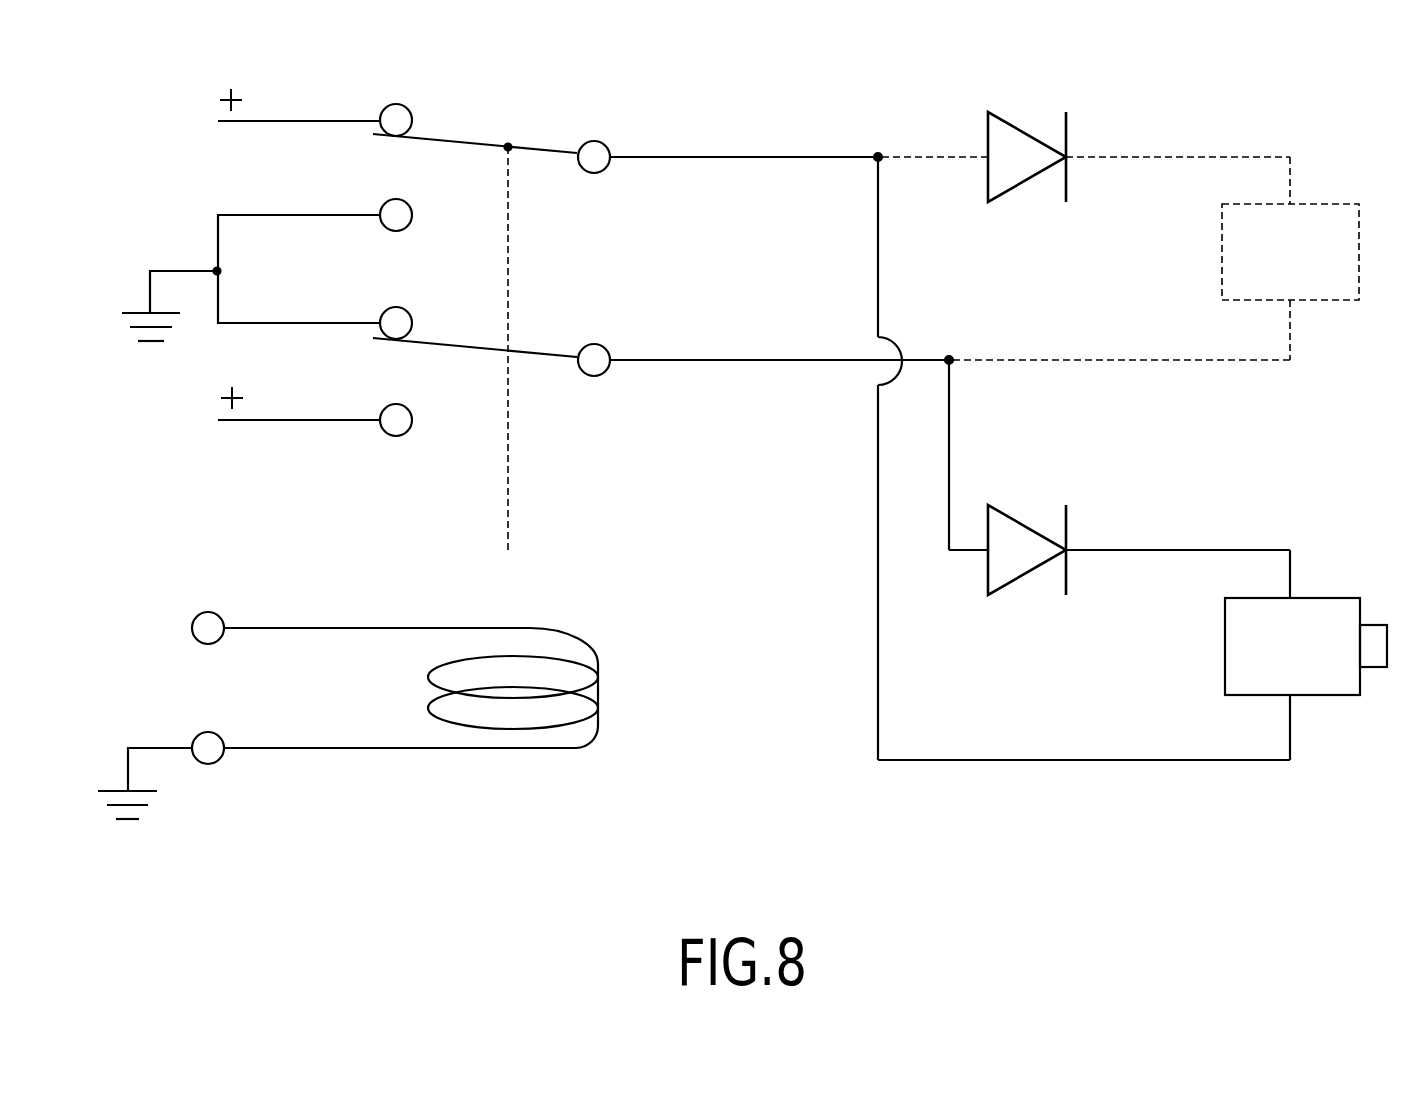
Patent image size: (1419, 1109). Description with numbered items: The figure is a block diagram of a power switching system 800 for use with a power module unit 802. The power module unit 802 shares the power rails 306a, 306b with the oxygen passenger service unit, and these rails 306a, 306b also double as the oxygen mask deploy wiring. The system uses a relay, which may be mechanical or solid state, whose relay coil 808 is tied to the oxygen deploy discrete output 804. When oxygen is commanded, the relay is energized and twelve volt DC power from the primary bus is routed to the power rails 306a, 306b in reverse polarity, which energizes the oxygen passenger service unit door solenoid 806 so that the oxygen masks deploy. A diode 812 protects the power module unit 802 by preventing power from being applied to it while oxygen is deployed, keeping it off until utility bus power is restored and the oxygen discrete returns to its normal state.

The power switching system 800 is at (762, 890).
The power rail 306a is at (703, 157).
The power rail 306b is at (703, 360).
The power module unit 802 is at (1328, 204).
The oxygen deploy discrete output 804 is at (210, 612).
The oxygen passenger service unit door solenoid 806 is at (1330, 598).
The relay coil 808 is at (598, 688).
The diode 812 is at (1018, 517).